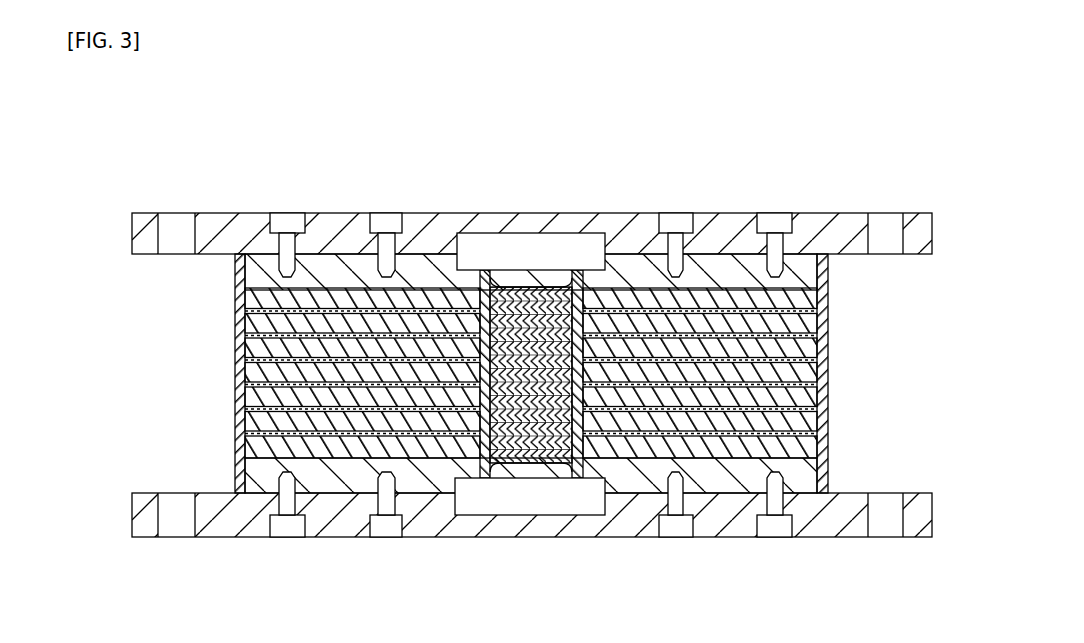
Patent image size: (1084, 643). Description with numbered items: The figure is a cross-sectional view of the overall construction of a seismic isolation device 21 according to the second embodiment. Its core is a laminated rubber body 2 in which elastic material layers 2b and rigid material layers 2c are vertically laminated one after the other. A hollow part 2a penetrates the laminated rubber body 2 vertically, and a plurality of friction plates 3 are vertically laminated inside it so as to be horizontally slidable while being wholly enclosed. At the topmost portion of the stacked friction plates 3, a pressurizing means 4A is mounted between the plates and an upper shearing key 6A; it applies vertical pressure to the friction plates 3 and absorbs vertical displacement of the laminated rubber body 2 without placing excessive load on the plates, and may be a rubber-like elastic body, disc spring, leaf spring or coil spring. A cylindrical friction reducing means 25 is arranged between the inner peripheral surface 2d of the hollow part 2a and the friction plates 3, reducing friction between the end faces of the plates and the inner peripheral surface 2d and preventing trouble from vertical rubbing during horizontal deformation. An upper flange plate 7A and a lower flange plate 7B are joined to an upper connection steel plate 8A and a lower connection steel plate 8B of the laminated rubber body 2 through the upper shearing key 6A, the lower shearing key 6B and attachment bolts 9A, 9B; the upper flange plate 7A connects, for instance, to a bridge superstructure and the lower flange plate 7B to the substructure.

The seismic isolation device 21 is at (503, 134).
The laminated rubber body 2 is at (587, 372).
The hollow part 2a is at (580, 465).
The elastic material layers 2b is at (828, 331).
The rigid material layers 2c is at (828, 374).
The inner peripheral surface 2d is at (506, 472).
The friction plates 3 is at (553, 300).
The pressurizing means 4A is at (513, 277).
The friction reducing means 25 is at (590, 282).
The upper shearing key 6A is at (478, 238).
The lower shearing key 6B is at (478, 505).
The upper flange plate 7A is at (829, 213).
The lower flange plate 7B is at (838, 537).
The upper connection steel plate 8A is at (733, 265).
The lower connection steel plate 8B is at (742, 487).
The attachment bolts 9A is at (680, 220).
The attachment bolts 9B is at (680, 520).